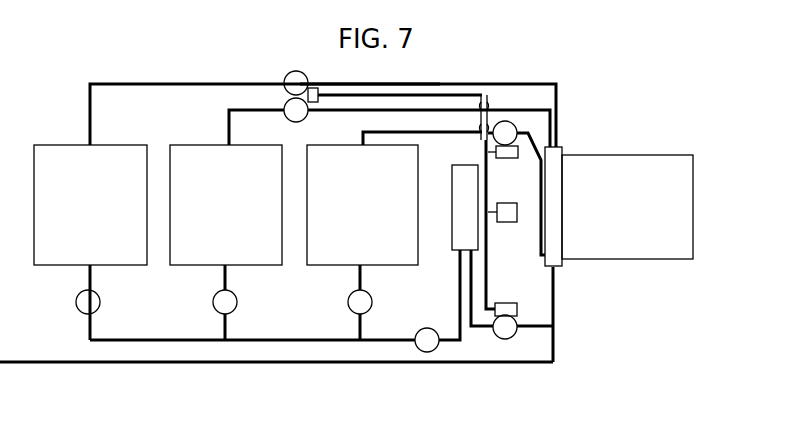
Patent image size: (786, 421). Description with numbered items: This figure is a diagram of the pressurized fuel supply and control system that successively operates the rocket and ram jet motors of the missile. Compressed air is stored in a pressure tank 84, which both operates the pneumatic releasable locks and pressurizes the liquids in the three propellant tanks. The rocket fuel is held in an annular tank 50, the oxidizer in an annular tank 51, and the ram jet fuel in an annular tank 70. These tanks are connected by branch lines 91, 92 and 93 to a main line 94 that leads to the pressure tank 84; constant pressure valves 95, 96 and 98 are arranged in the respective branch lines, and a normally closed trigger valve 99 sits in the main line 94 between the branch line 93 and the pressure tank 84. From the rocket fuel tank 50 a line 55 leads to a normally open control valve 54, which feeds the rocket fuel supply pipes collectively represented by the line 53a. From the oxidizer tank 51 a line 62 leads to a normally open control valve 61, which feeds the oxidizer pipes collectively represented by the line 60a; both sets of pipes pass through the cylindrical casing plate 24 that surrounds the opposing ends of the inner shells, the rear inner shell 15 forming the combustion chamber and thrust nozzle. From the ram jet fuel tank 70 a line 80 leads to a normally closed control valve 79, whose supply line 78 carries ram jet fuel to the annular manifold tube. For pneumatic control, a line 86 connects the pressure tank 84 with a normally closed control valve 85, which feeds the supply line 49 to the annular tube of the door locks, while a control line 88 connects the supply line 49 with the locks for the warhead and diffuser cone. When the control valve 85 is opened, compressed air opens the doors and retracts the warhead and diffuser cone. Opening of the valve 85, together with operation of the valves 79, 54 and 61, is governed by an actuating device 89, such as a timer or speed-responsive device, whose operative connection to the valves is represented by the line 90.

The rear inner shell 15 is at (635, 155).
The cylindrical casing plate 24 is at (553, 205).
The supply line 49 is at (555, 292).
The annular tank 50 is at (112, 156).
The annular tank 51 is at (240, 168).
The line 53a is at (443, 83).
The control valve 54 is at (285, 72).
The line 55 is at (173, 83).
The line 60a is at (508, 110).
The control valve 61 is at (300, 120).
The line 62 is at (227, 108).
The annular tank 70 is at (337, 160).
The supply line 78 is at (526, 143).
The control valve 79 is at (516, 127).
The line 80 is at (438, 134).
The pressure tank 84 is at (458, 205).
The control valve 85 is at (513, 338).
The line 86 is at (475, 330).
The control line 88 is at (305, 365).
The actuating device 89 is at (509, 217).
The line 90 is at (486, 273).
The branch line 91 is at (92, 327).
The branch line 92 is at (229, 327).
The branch line 93 is at (362, 322).
The main line 94 is at (302, 338).
The constant pressure valve 95 is at (101, 300).
The constant pressure valve 96 is at (238, 300).
The constant pressure valve 98 is at (373, 298).
The trigger valve 99 is at (430, 328).